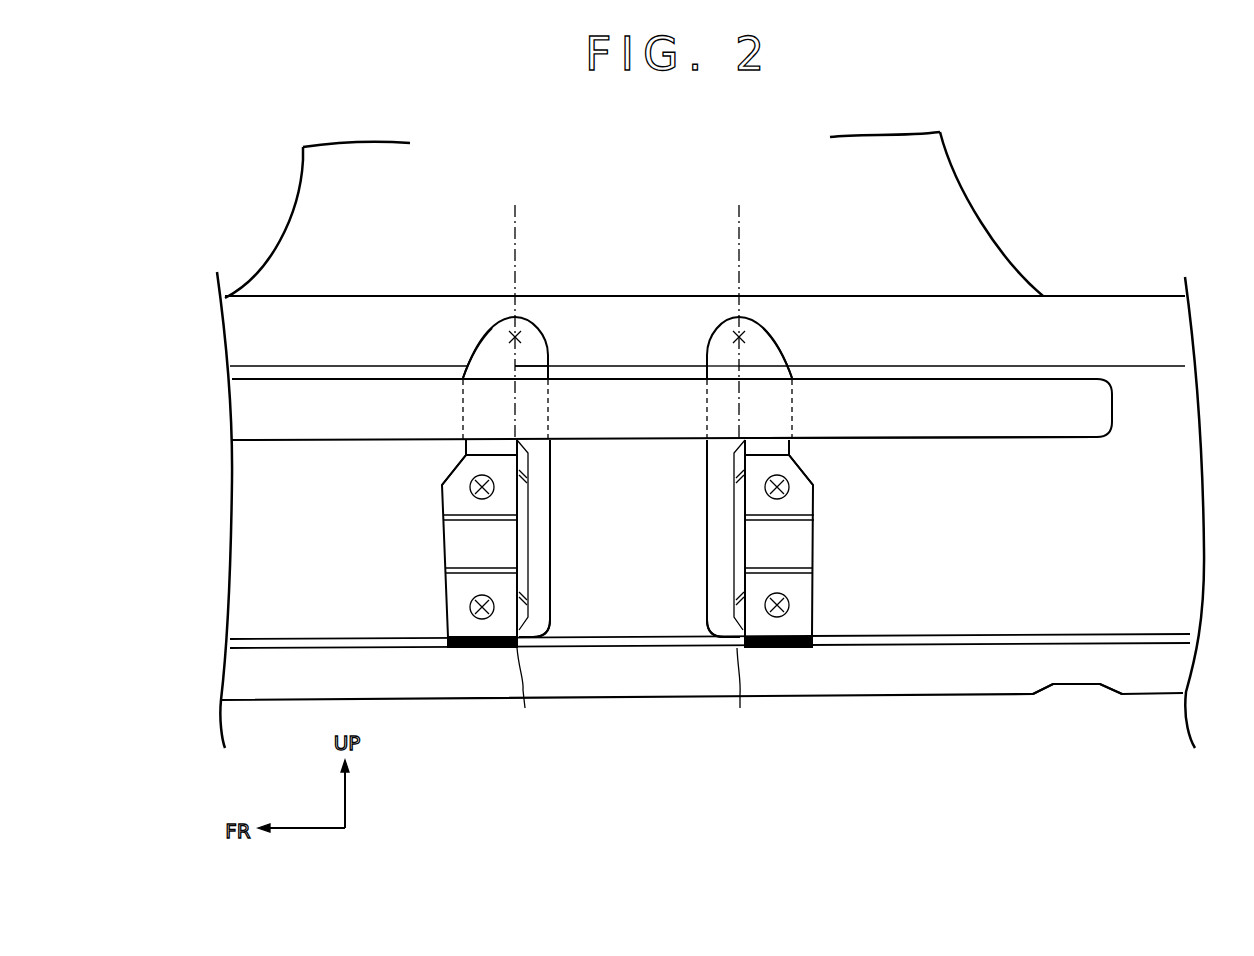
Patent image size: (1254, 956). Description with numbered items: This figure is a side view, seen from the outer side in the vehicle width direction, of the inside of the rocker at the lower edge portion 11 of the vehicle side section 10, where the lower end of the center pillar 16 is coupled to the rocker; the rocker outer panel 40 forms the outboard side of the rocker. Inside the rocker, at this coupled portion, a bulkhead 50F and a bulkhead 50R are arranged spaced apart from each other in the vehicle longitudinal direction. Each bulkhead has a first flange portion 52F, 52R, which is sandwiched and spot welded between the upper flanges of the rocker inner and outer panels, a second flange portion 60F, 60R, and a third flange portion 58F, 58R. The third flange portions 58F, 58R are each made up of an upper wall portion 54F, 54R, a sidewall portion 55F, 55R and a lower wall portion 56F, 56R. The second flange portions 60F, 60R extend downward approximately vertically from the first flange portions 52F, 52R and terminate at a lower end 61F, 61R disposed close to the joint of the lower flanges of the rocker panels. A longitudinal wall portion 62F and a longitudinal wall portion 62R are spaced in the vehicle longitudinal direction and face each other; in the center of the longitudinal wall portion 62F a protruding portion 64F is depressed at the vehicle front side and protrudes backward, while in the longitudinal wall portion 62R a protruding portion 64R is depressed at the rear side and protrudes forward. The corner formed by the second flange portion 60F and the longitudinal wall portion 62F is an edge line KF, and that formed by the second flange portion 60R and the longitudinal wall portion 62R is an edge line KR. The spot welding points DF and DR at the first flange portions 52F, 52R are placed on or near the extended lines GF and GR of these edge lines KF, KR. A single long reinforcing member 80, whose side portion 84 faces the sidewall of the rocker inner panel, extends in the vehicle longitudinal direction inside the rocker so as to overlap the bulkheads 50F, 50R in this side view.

The vehicle side section 10 is at (1065, 172).
The lower edge portion 11 is at (1135, 294).
The center pillar 16 is at (983, 227).
The rocker outer panel 40 is at (1130, 617).
The bulkhead 50F is at (467, 341).
The bulkhead 50R is at (775, 341).
The first flange portion 52F is at (487, 353).
The first flange portion 52R is at (766, 353).
The upper wall portion 54F is at (467, 376).
The upper wall portion 54R is at (792, 367).
The sidewall portion 55F is at (433, 543).
The sidewall portion 55R is at (828, 543).
The lower wall portion 56F is at (446, 640).
The lower wall portion 56R is at (814, 640).
The third flange portion 58F is at (434, 480).
The third flange portion 58R is at (828, 480).
The second flange portion 60F is at (572, 538).
The second flange portion 60R is at (688, 538).
The lower end 61F is at (533, 632).
The lower end 61R is at (720, 636).
The longitudinal wall portion 62F is at (519, 530).
The longitudinal wall portion 62R is at (737, 530).
The protruding portion 64F is at (528, 485).
The protruding portion 64R is at (727, 485).
The reinforcing member 80 is at (1002, 442).
The side portion 84 is at (957, 405).
The extended line GF is at (510, 211).
The extended line GR is at (745, 211).
The welding point DF is at (520, 335).
The welding point DR is at (733, 335).
The edge line KF is at (527, 695).
The edge line KR is at (735, 695).